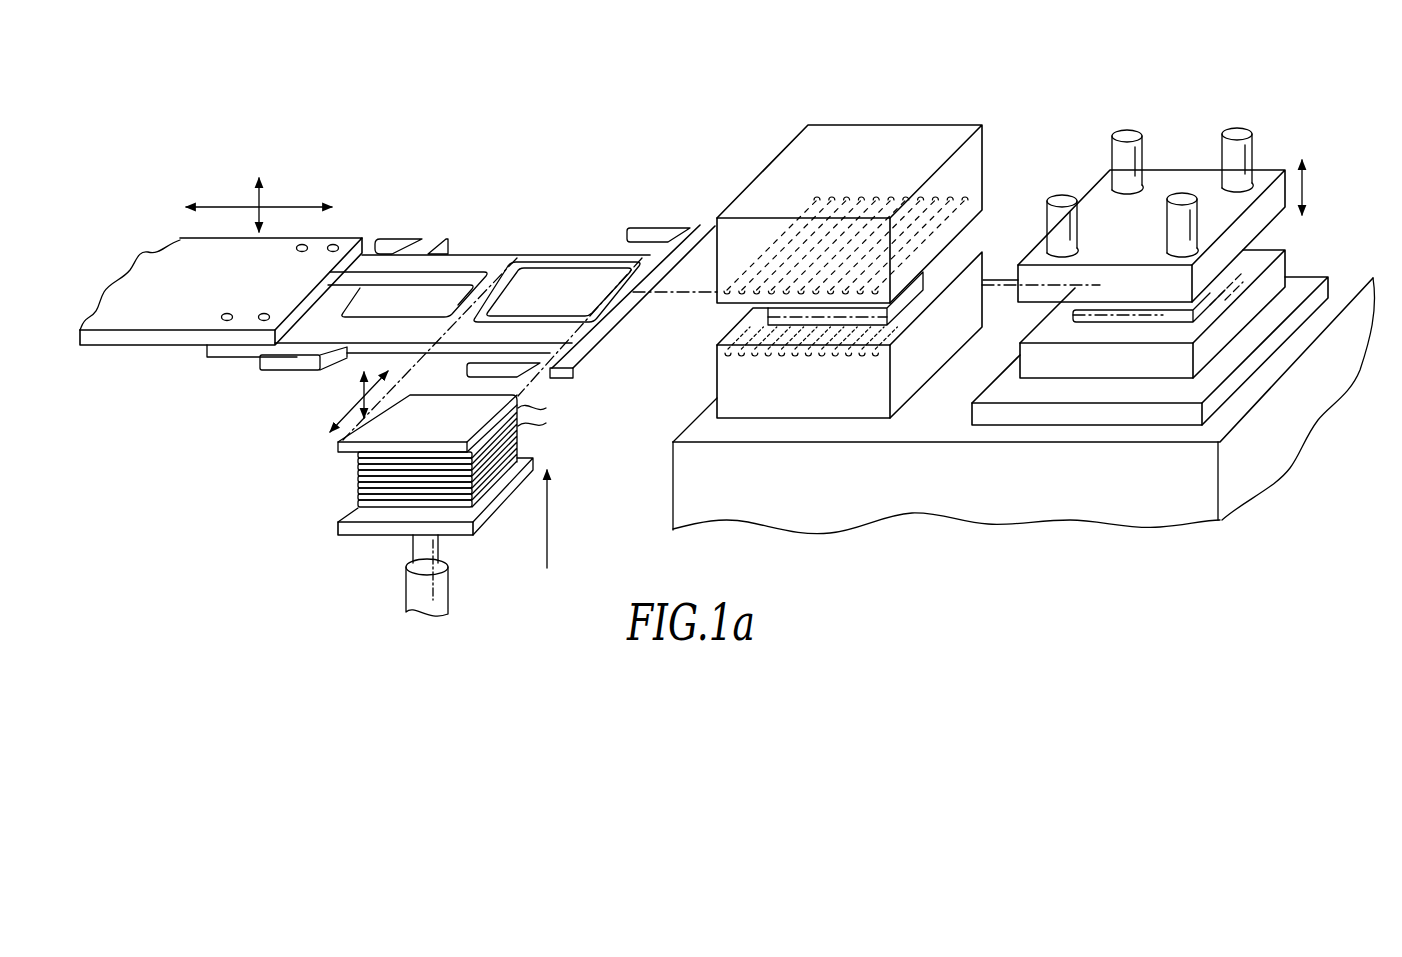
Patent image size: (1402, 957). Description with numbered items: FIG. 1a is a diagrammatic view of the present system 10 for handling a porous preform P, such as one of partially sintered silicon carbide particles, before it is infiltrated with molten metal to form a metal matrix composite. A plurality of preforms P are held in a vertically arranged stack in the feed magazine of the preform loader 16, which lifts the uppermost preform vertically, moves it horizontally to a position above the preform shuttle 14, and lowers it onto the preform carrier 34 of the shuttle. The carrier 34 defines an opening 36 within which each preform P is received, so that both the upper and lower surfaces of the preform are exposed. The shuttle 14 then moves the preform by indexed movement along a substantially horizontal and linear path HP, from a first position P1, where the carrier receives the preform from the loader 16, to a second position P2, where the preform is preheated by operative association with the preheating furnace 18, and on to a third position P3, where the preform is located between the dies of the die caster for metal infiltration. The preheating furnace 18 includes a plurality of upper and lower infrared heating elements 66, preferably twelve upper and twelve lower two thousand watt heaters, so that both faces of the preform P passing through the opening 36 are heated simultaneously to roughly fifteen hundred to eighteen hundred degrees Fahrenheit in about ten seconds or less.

The bonding station / apparatus 10 is at (1270, 153).
The preform shuttle 14 is at (347, 232).
The preform loader 16 is at (326, 449).
The preheating furnace 18 is at (908, 118).
The preform carrier 34 is at (478, 253).
The opening 36 is at (556, 272).
The infrared heating elements 66 is at (823, 197).
The preform P is at (539, 412).
The first position P1 is at (581, 287).
The second position P2 is at (957, 248).
The third position P3 is at (1258, 237).
The horizontal path HP is at (683, 293).